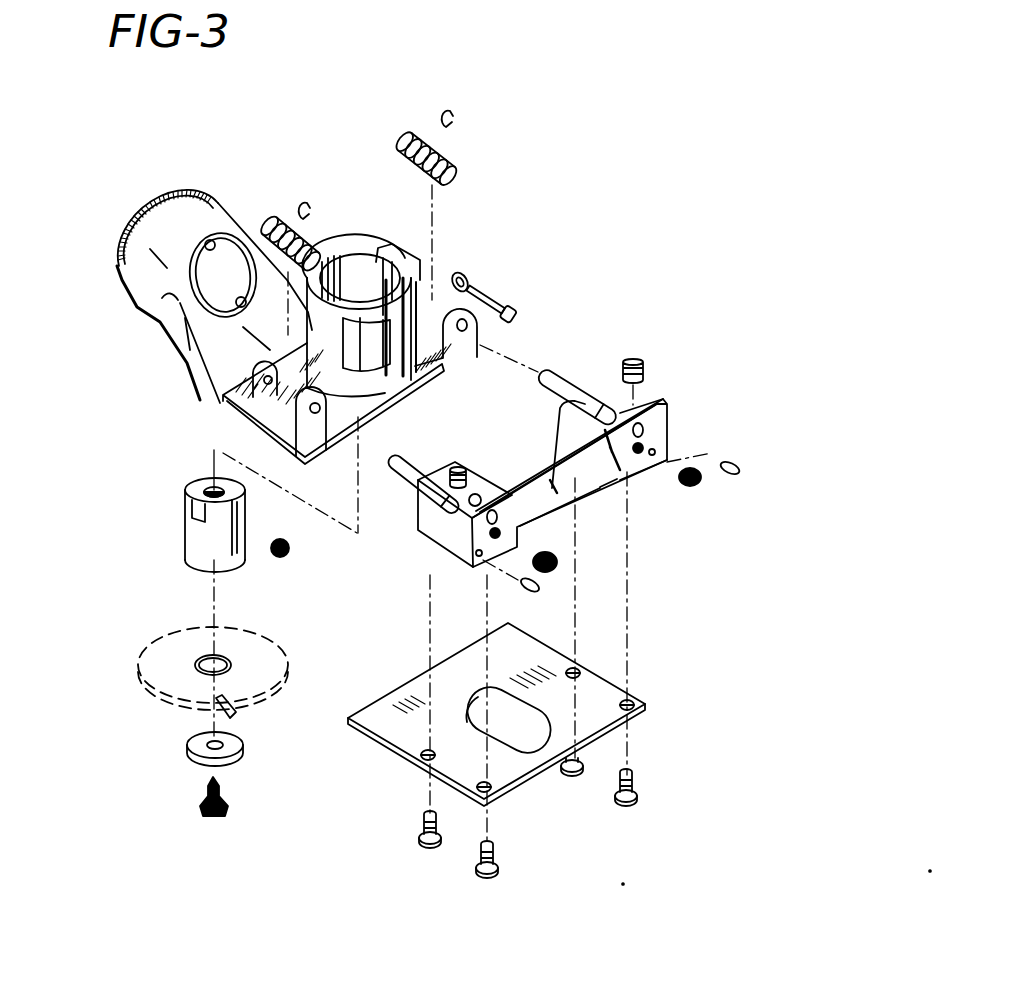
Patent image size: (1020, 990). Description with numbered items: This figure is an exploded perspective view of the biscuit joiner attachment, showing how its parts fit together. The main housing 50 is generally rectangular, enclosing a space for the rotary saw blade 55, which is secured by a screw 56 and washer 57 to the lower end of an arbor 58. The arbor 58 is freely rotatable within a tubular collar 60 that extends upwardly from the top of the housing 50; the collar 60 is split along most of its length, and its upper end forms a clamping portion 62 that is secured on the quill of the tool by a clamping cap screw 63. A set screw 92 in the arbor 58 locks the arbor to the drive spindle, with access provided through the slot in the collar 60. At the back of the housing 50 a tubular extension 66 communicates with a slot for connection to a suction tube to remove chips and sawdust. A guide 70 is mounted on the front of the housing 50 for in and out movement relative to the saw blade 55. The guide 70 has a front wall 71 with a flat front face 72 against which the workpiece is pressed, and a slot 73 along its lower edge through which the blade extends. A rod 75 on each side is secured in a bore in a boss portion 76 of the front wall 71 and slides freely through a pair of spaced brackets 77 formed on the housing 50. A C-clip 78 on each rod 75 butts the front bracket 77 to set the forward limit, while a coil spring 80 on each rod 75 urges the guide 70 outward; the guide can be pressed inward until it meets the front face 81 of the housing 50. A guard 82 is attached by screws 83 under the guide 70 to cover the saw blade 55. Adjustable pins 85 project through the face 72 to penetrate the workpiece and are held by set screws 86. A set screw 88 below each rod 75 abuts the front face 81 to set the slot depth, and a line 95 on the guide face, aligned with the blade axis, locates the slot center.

The main housing 50 is at (171, 452).
The rotary saw blade 55 is at (183, 650).
The screw 56 is at (158, 794).
The washer 57 is at (158, 739).
The arbor 58 is at (166, 525).
The tubular collar 60 is at (452, 353).
The clamping portion 62 is at (361, 275).
The clamping cap screw 63 is at (515, 273).
The tubular extension 66 is at (177, 296).
The guide 70 is at (613, 468).
The front wall 71 is at (567, 450).
The front face 72 is at (733, 439).
The slot 73 is at (613, 520).
The rod 75 is at (499, 414).
The boss portion 76 is at (610, 416).
The brackets 77 is at (286, 403).
The C-clip 78 is at (356, 125).
The coil spring 80 is at (329, 184).
The front face 81 is at (318, 445).
The guard 82 is at (466, 714).
The screws 83 is at (481, 818).
The adjustable pins 85 is at (653, 553).
The set screws 86 is at (558, 387).
The set screw 88 is at (672, 532).
The set screw 92 is at (322, 561).
The line 95 is at (671, 564).